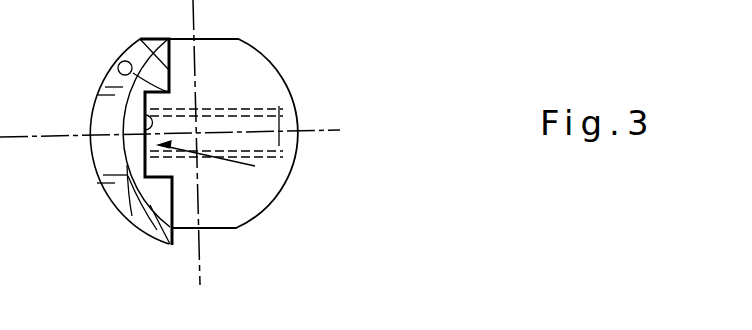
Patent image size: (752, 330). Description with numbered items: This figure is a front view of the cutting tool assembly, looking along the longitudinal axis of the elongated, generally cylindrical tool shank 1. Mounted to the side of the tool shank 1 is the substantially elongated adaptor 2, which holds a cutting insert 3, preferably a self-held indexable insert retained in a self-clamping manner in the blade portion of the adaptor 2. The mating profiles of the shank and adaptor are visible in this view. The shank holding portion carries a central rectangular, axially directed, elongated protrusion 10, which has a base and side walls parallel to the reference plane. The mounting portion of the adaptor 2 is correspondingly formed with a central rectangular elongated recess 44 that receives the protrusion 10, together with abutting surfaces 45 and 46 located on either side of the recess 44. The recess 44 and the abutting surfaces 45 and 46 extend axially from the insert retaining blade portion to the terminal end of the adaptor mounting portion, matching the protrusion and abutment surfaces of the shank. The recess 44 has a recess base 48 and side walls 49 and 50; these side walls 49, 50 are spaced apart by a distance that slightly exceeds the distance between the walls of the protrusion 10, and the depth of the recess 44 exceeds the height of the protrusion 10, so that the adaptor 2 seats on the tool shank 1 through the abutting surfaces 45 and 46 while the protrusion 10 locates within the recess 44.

The tool shank 1 is at (257, 78).
The adaptor 2 is at (112, 120).
The cutting insert 3 is at (112, 152).
The protrusion 10 is at (226, 156).
The recess 44 is at (141, 159).
The abutting surface 45 is at (165, 41).
The abutting surface 46 is at (156, 228).
The recess base 48 is at (146, 117).
The side wall 49 is at (138, 75).
The side wall 50 is at (150, 195).